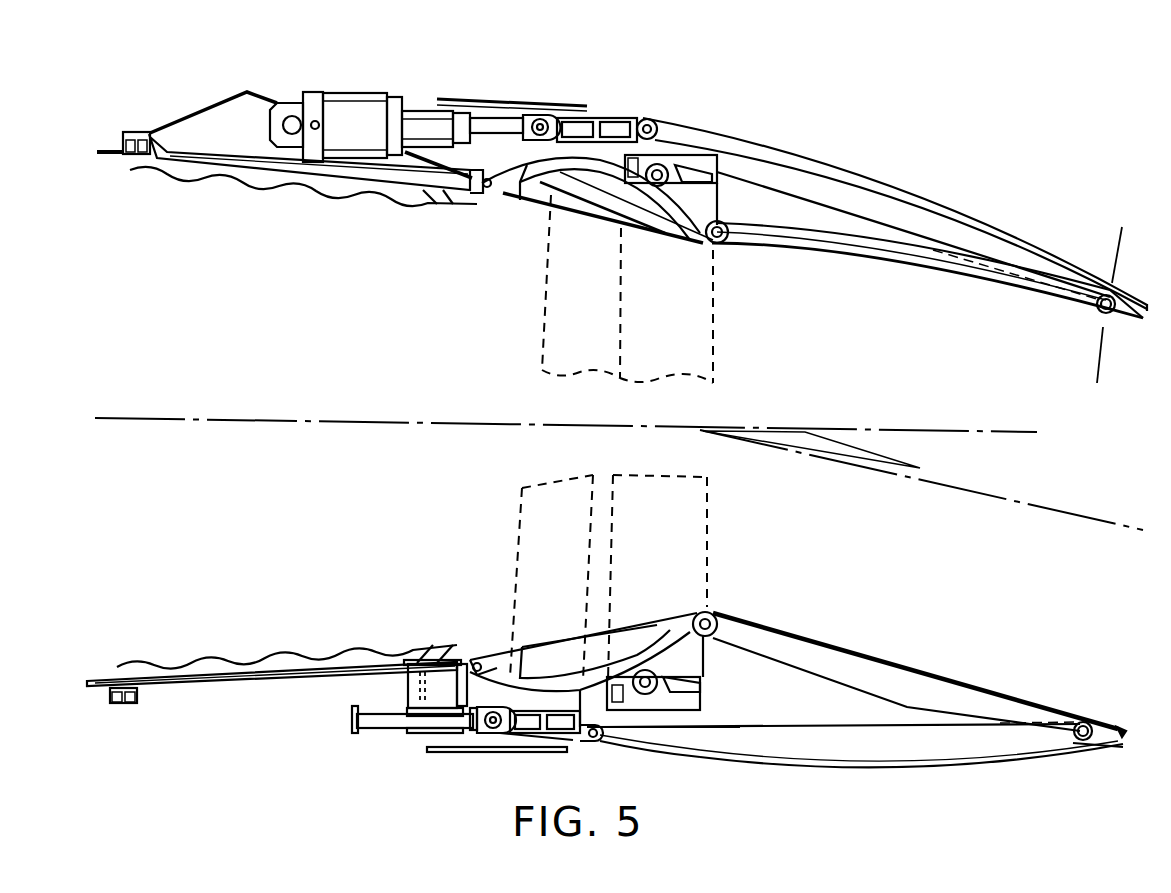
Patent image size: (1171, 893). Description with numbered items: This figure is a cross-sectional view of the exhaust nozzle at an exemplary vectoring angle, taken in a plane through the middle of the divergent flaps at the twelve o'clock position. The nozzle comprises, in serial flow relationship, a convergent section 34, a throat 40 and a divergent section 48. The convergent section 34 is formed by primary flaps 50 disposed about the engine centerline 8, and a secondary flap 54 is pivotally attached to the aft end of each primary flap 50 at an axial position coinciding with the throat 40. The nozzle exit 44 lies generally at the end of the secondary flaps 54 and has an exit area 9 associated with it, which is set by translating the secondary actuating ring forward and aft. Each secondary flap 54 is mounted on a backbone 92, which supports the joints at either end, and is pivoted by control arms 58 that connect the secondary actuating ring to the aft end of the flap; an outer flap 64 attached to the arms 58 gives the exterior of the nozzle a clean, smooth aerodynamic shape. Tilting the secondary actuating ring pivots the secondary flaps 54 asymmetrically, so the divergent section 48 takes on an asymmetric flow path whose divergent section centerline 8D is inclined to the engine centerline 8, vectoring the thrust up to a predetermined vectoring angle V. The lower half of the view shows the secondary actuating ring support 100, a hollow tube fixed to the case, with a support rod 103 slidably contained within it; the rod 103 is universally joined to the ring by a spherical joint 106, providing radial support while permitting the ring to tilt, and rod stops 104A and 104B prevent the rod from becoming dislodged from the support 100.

The engine centerline 8 is at (1153, 187).
The divergent section centerline 8D is at (992, 483).
The exit area A9 9 is at (1131, 225).
The convergent section 34 is at (584, 419).
The throat 40 is at (722, 257).
The nozzle exit 44 is at (1108, 720).
The divergent section 48 is at (963, 541).
The primary flap 50 is at (512, 200).
The secondary flap 54 is at (853, 270).
The control arm 58 is at (683, 188).
The outer flap 64 is at (868, 170).
The backbone 92 is at (777, 243).
The secondary actuating ring support 100 is at (417, 735).
The support rod 103 is at (390, 715).
The rod stop 104A is at (350, 718).
The rod stop 104B is at (477, 752).
The spherical joint 106 is at (493, 731).
The vectoring angle V is at (898, 393).